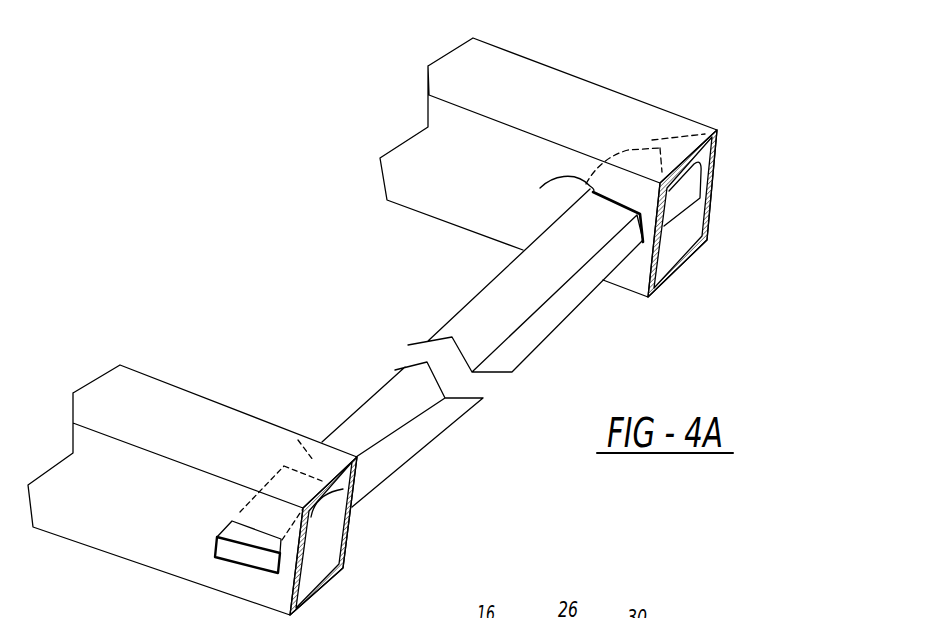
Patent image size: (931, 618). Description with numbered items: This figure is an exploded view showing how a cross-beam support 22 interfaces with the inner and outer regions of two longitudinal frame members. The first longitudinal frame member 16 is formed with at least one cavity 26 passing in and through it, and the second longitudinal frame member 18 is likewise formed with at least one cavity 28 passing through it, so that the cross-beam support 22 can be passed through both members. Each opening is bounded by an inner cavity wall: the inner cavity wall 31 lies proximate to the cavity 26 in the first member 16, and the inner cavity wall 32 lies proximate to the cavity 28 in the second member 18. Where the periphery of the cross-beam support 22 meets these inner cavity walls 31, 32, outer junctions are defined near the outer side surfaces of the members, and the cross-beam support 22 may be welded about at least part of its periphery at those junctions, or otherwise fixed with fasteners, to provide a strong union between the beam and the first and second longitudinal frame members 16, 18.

The first longitudinal frame member 16 is at (543, 100).
The second longitudinal frame member 18 is at (138, 537).
The cross-beam support 22 is at (382, 410).
The cavity 26 is at (540, 188).
The cavity 28 is at (305, 480).
The inner cavity wall 31 is at (703, 178).
The inner cavity wall 32 is at (352, 507).